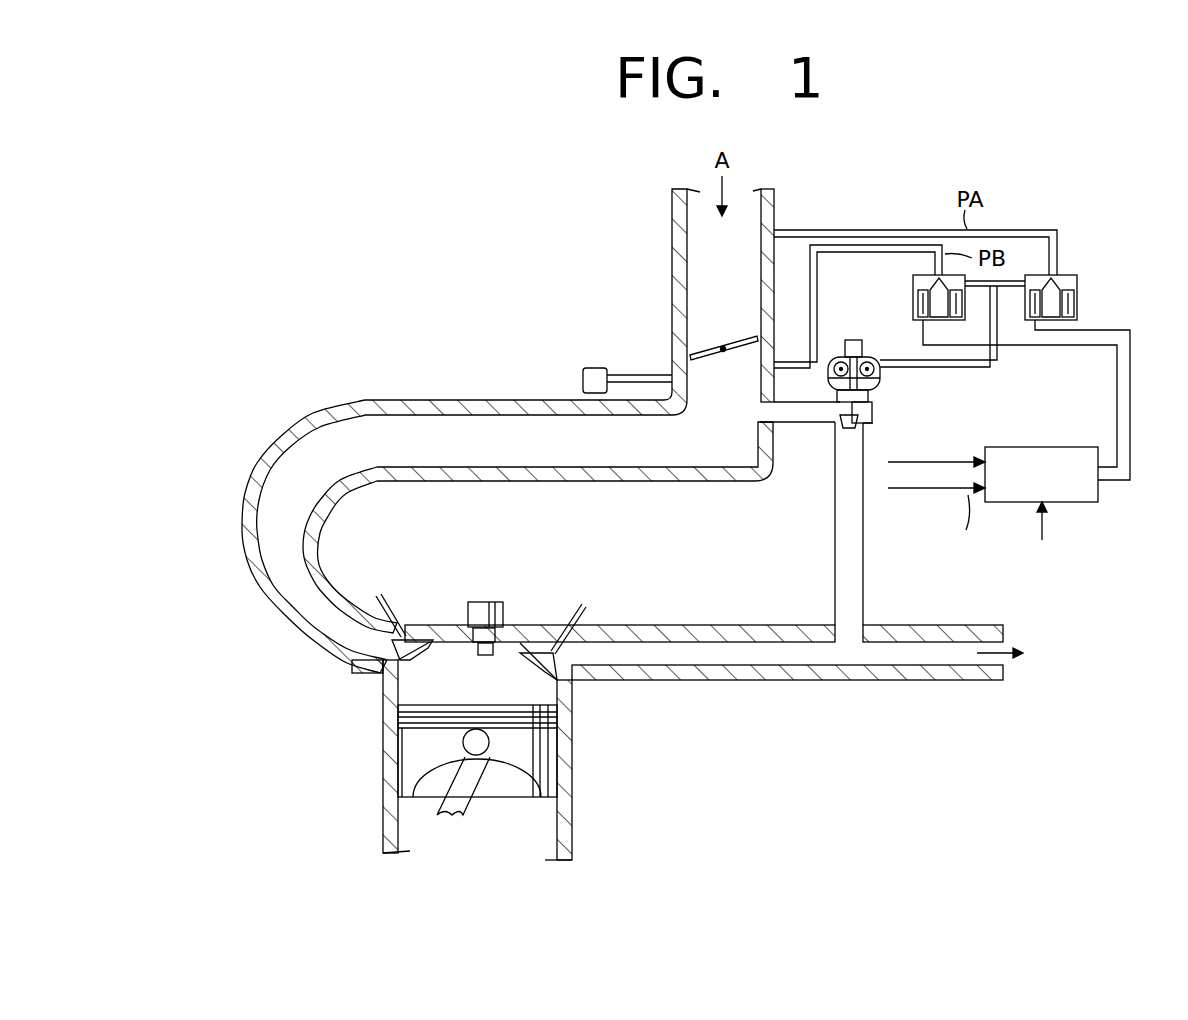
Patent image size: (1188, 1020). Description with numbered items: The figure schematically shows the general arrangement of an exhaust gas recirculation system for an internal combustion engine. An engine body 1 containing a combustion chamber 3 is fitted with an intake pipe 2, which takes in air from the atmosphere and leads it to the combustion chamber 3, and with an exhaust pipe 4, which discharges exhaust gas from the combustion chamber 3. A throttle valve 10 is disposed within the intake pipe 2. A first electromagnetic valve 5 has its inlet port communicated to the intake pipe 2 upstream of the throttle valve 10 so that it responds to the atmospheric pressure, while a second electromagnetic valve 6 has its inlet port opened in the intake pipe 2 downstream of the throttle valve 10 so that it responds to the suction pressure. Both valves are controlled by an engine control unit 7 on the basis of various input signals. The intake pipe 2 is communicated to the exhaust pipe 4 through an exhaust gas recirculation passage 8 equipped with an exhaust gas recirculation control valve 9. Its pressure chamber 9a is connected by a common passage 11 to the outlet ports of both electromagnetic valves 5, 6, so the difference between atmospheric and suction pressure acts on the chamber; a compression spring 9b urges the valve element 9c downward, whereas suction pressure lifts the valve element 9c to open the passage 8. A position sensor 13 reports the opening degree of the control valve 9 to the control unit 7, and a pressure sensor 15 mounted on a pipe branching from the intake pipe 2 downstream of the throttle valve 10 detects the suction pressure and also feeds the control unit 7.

The engine body 1 is at (582, 737).
The intake pipe 2 is at (242, 562).
The combustion chamber 3 is at (412, 694).
The exhaust pipe 4 is at (790, 680).
The first electromagnetic valve 5 is at (1077, 284).
The second electromagnetic valve 6 is at (913, 285).
The engine control unit 7 is at (1073, 503).
The exhaust gas recirculation passage 8 is at (866, 580).
The exhaust gas recirculation control valve 9 is at (860, 389).
The pressure chamber 9a is at (872, 358).
The compression spring 9b is at (832, 369).
The valve element 9c is at (866, 418).
The throttle valve 10 is at (698, 352).
The common passage 11 is at (997, 363).
The position sensor 13 is at (858, 340).
The pressure sensor 15 is at (595, 367).